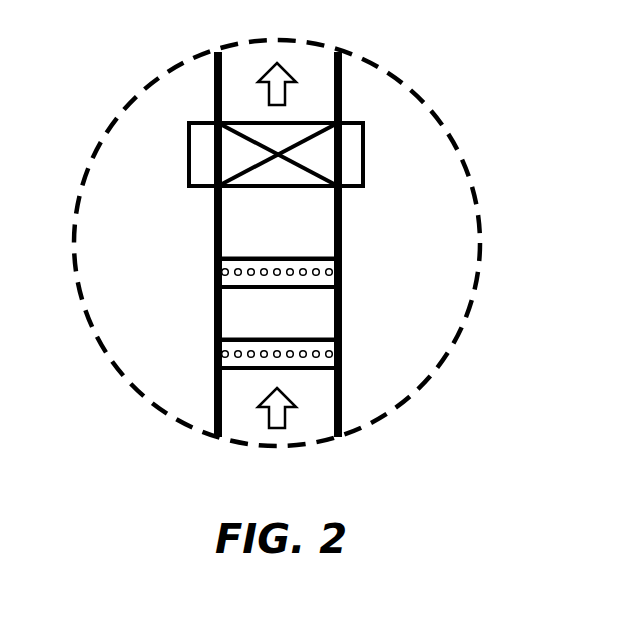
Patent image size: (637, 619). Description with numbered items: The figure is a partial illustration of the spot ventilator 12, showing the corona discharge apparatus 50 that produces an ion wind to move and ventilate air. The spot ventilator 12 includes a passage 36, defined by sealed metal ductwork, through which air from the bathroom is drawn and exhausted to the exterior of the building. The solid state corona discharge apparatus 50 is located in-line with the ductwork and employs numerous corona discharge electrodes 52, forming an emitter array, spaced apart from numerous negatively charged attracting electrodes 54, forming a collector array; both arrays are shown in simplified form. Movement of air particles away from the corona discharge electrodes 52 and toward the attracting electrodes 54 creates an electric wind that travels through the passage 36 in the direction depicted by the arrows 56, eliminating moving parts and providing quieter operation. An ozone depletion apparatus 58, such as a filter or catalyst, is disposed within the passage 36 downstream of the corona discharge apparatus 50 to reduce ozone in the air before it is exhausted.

The spot ventilator 12 is at (424, 187).
The passage 36 is at (240, 418).
The corona discharge apparatus 50 is at (340, 272).
The corona discharge electrodes 52 is at (290, 258).
The attracting electrodes 54 is at (306, 258).
The arrows 56 is at (282, 96).
The ozone depletion apparatus 58 is at (363, 143).